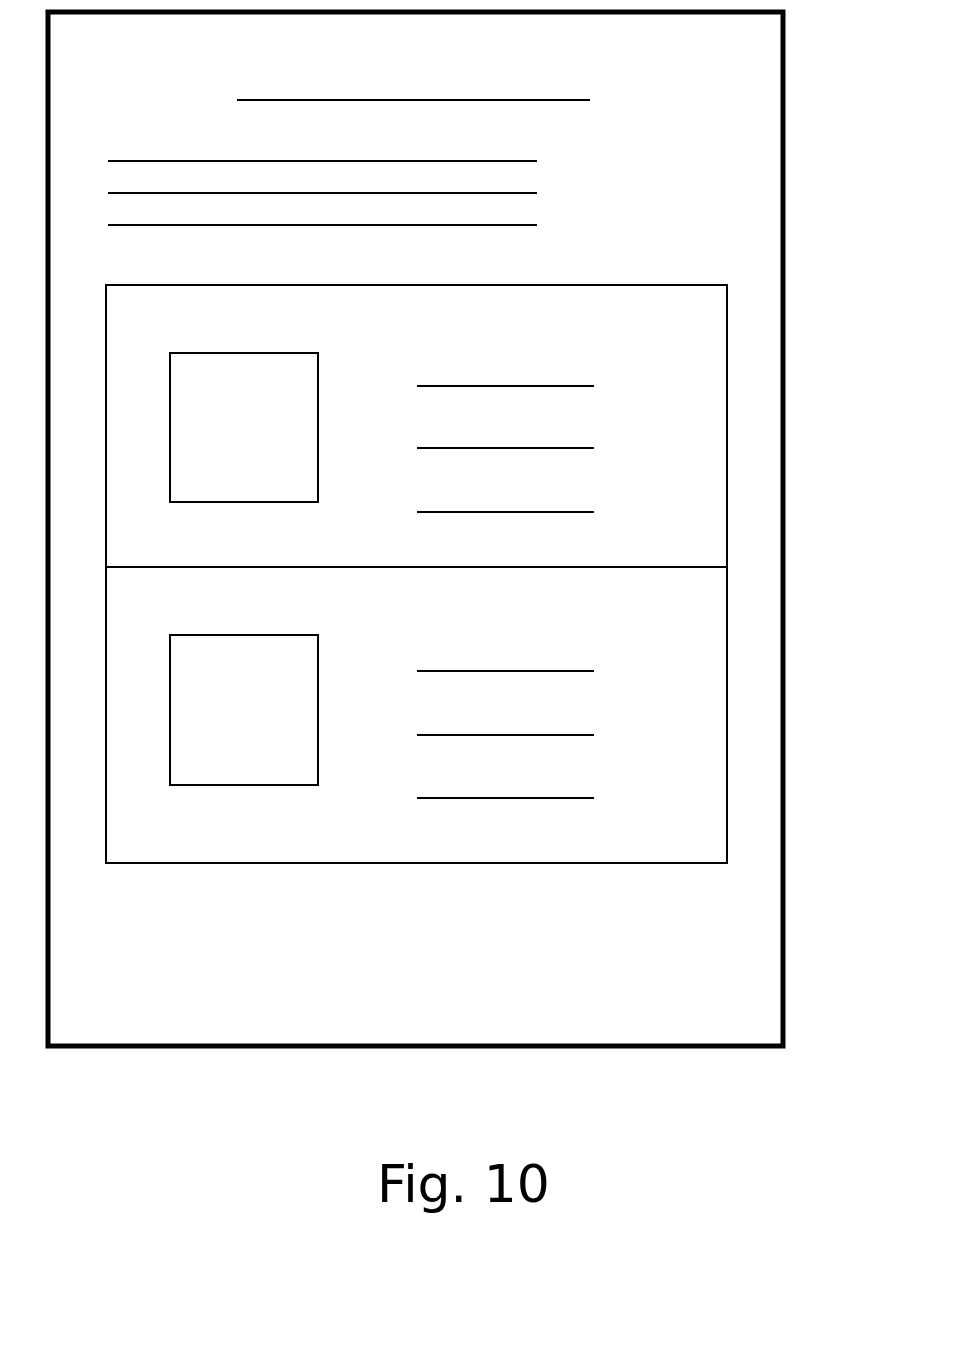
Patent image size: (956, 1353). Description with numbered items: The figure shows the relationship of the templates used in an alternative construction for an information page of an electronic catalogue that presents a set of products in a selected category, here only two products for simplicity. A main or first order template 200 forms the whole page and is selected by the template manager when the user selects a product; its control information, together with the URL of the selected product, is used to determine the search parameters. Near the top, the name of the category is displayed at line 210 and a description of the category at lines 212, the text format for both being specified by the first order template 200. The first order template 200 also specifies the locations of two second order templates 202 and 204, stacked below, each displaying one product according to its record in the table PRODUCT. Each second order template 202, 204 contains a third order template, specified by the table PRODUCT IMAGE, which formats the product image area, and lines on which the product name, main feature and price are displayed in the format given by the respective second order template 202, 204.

The first order template 200 is at (497, 1048).
The second order template 202 is at (718, 543).
The second order template 204 is at (718, 690).
The line 210 is at (573, 100).
The lines 212 is at (563, 162).